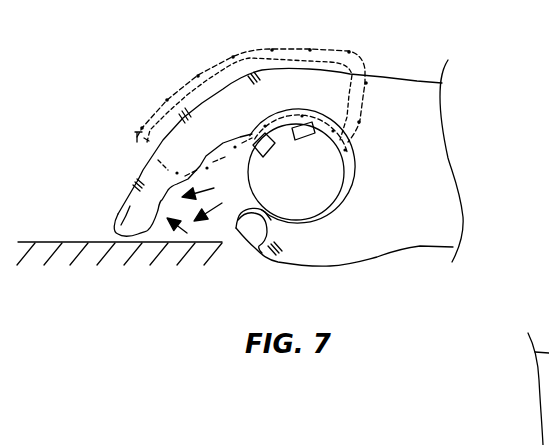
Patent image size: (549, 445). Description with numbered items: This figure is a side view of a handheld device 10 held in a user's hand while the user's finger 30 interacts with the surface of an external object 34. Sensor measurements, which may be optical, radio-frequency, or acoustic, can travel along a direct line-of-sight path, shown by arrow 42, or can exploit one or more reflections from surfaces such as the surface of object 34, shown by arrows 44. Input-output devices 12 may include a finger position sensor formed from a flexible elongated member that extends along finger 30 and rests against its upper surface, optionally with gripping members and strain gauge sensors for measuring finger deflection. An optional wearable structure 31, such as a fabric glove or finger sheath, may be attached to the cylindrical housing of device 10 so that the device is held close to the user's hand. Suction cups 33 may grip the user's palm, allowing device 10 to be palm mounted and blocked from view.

The device 10 is at (335, 173).
The input-output devices 12 is at (188, 92).
The finger 30 is at (146, 168).
The wearable structure 31 is at (156, 112).
The suction cups 33 is at (300, 139).
The object 34 is at (50, 241).
The arrow 42 is at (214, 188).
The arrows 44 is at (222, 203).